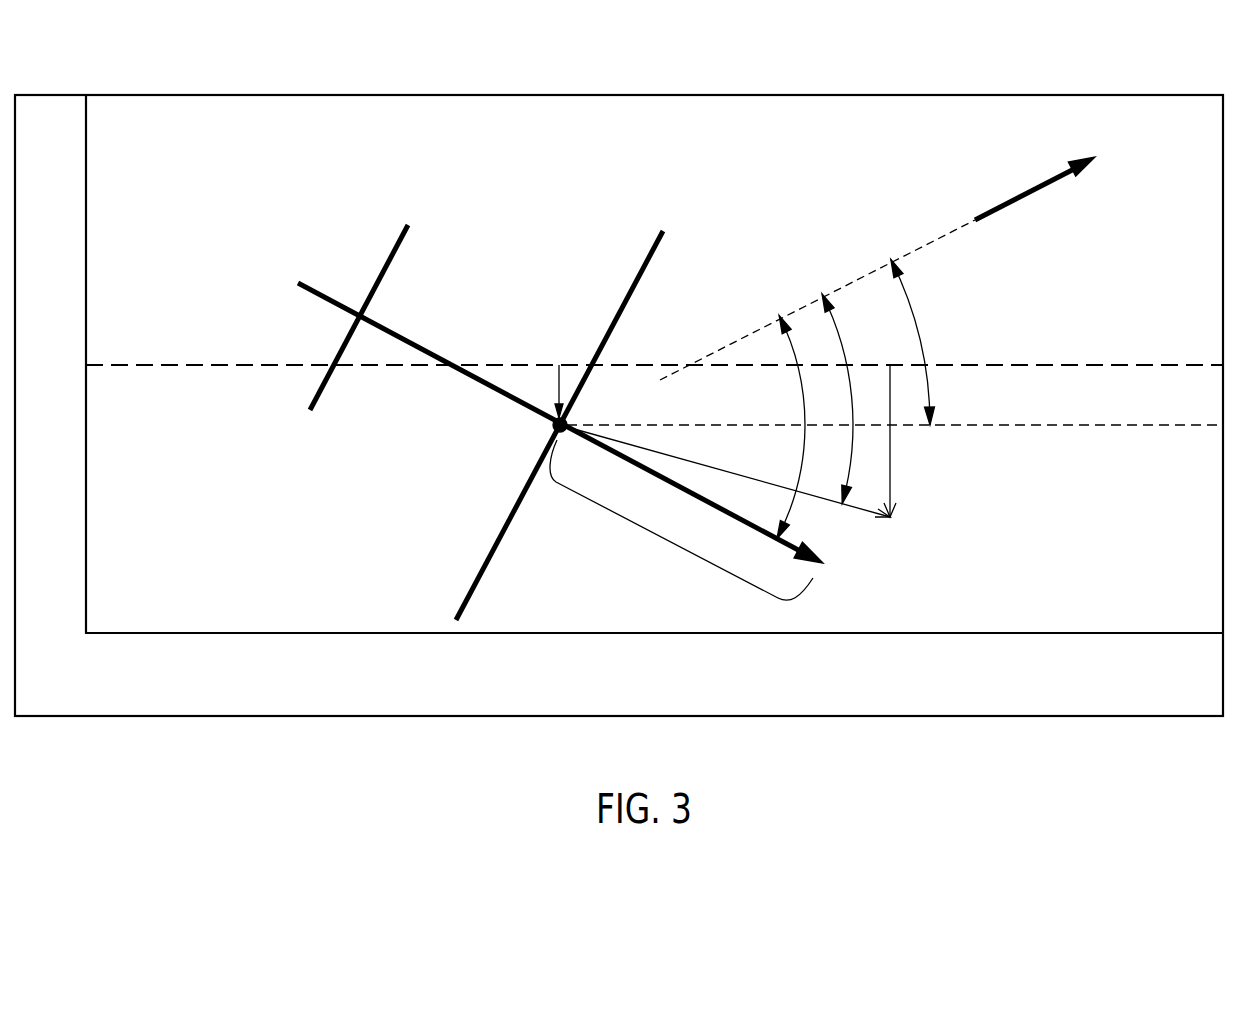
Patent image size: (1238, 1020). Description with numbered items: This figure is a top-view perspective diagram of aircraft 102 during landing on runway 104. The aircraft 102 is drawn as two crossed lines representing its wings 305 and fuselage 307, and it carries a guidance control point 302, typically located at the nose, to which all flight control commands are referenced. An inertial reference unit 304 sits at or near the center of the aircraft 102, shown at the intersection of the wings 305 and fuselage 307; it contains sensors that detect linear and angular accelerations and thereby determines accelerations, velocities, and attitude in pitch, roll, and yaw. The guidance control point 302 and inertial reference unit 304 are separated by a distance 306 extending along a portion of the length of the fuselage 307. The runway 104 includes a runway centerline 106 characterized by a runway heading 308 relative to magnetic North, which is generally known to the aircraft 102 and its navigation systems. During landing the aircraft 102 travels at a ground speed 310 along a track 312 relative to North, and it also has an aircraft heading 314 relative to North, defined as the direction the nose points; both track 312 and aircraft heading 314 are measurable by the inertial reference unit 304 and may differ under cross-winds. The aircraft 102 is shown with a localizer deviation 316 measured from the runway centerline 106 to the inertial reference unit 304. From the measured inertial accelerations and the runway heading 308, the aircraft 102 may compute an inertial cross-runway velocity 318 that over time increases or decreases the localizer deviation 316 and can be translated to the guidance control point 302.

The aircraft 102 is at (437, 412).
The runway 104 is at (193, 137).
The runway centerline 106 is at (128, 363).
The guidance control point 302 is at (815, 575).
The inertial reference unit 304 is at (552, 430).
The wings 305 is at (630, 282).
The distance 306 is at (665, 545).
The fuselage 307 is at (403, 328).
The runway heading 308 is at (890, 278).
The ground speed 310 is at (890, 520).
The track 312 is at (815, 300).
The aircraft heading 314 is at (772, 326).
The localizer deviation 316 is at (556, 382).
The inertial cross-runway velocity 318 is at (893, 457).